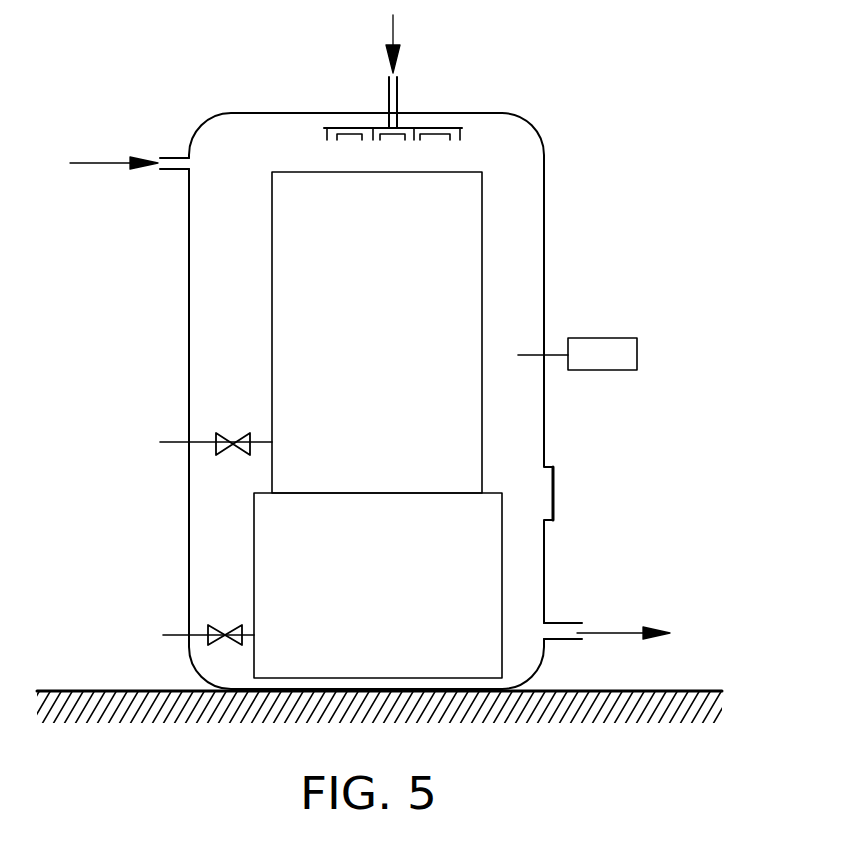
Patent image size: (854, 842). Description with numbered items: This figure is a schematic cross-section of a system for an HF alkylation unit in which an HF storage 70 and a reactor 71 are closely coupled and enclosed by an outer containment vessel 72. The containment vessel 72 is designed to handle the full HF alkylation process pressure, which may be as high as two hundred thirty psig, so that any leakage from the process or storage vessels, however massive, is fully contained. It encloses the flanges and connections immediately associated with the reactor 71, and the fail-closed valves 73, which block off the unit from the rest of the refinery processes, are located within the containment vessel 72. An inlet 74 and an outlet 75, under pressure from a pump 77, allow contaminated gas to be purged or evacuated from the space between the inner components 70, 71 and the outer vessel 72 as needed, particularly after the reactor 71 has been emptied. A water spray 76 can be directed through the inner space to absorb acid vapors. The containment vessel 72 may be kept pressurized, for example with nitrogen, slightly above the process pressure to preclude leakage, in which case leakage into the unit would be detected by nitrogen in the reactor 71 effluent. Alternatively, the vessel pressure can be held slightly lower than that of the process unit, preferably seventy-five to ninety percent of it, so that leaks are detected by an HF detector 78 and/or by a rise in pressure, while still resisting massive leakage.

The HF storage 70 is at (387, 600).
The reactor 71 is at (387, 304).
The outer containment vessel 72 is at (545, 197).
The fail-closed valves 73 is at (232, 442).
The inlet 74 is at (177, 157).
The outlet 75 is at (565, 622).
The water spray 76 is at (422, 128).
The pump 77 is at (622, 634).
The HF detector 78 is at (593, 338).